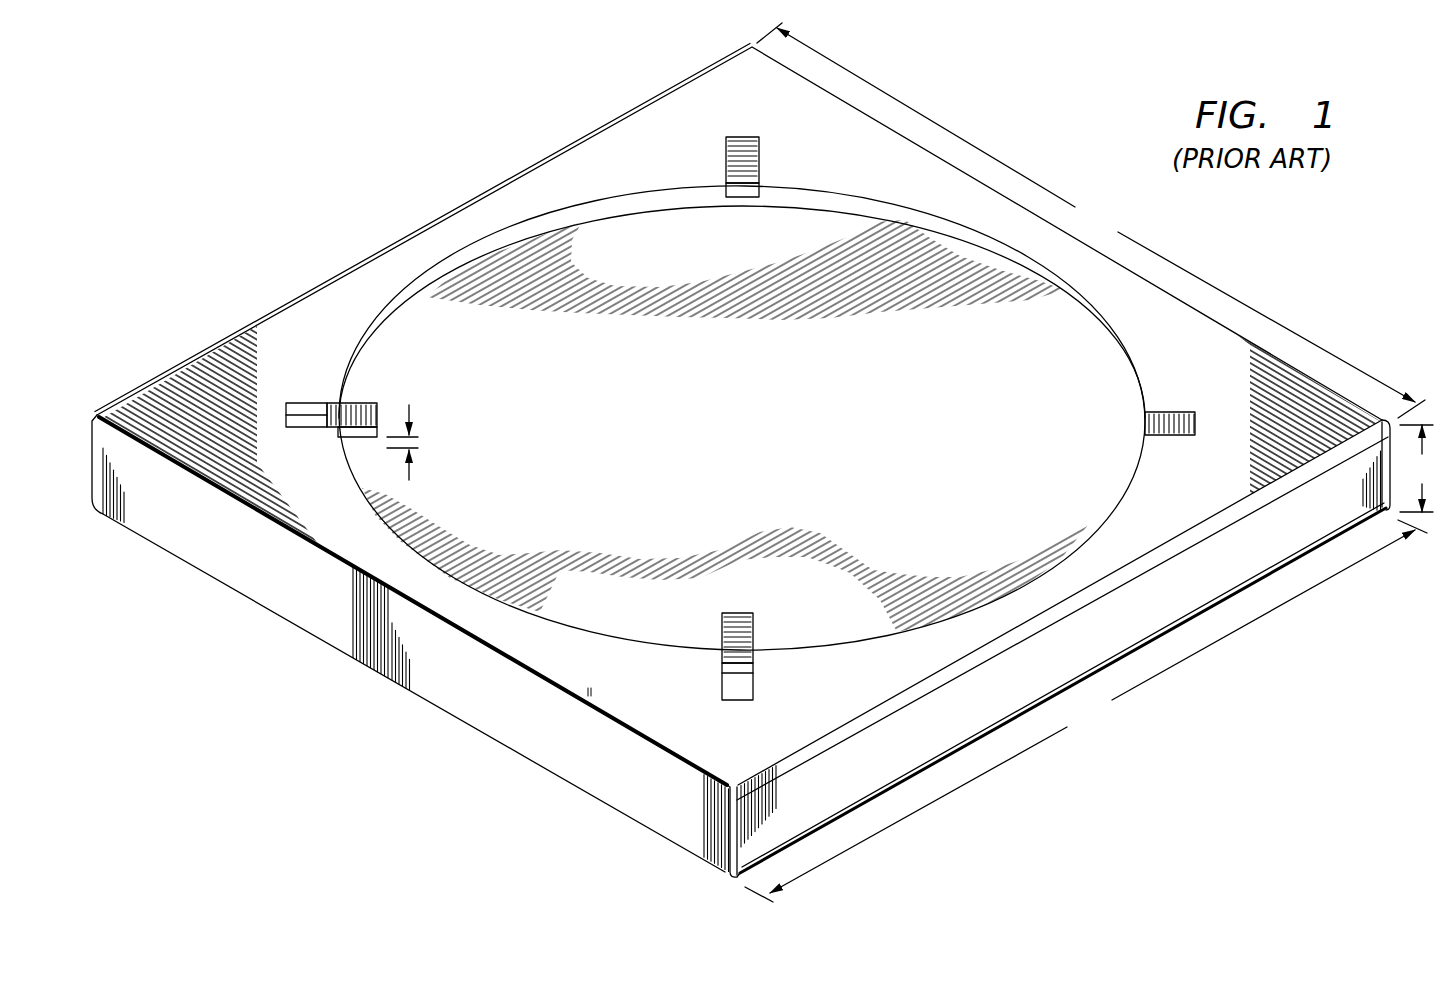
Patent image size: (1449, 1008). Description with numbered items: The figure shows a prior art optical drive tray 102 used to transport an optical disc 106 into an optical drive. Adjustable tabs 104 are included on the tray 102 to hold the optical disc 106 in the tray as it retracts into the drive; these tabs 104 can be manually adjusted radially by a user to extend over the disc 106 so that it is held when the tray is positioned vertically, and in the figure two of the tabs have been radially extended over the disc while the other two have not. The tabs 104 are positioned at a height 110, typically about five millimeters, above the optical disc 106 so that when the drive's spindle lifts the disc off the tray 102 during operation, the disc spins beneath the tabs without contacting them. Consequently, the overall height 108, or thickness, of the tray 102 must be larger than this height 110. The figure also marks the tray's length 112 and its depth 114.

The tray 102 is at (368, 208).
The adjustable tabs 104 is at (330, 430).
The optical disc 106 is at (633, 243).
The height 108 is at (1421, 468).
The height 110 is at (424, 442).
The length 112 is at (1091, 220).
The depth 114 is at (1086, 711).